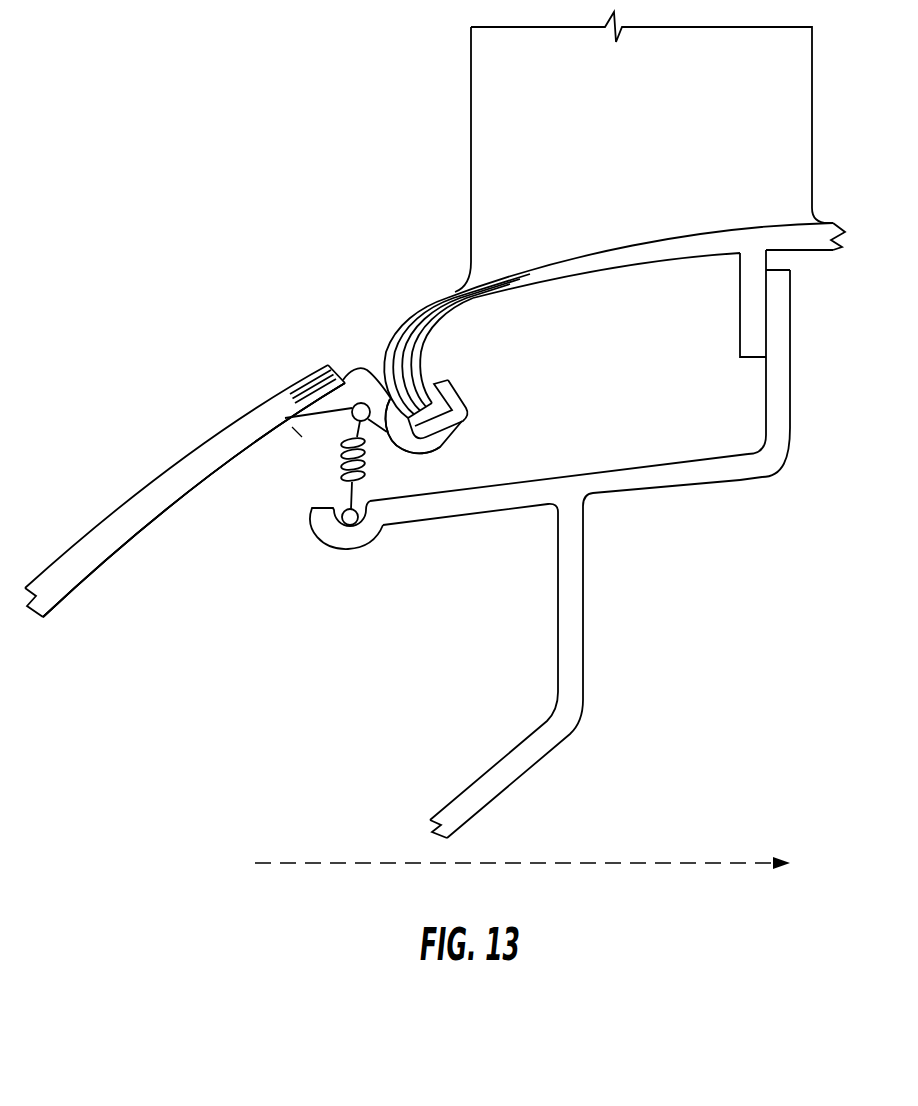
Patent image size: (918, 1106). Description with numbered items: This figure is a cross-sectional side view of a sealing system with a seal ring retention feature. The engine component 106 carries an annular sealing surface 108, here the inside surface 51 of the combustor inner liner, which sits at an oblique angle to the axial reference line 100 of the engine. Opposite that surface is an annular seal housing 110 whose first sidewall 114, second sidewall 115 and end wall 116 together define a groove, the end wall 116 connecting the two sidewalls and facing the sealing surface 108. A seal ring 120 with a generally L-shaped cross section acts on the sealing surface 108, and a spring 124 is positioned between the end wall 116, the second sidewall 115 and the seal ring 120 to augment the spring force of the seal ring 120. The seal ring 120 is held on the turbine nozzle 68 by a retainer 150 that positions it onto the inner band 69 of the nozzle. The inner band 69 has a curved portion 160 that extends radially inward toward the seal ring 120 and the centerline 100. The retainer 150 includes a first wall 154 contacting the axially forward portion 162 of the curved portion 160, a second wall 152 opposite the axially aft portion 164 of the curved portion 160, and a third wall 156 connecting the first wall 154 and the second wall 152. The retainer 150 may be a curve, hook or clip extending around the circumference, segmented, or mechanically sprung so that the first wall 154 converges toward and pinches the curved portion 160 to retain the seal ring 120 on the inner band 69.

The inside surface 51 is at (86, 574).
The turbine nozzle 68 is at (654, 175).
The inner band 69 is at (445, 306).
The axial reference line 100 is at (617, 862).
The engine component 106 is at (150, 490).
The sealing surface 108 is at (190, 494).
The seal housing 110 is at (557, 560).
The first sidewall 114 is at (767, 410).
The second sidewall 115 is at (313, 507).
The end wall 116 is at (555, 472).
The seal ring 120 is at (300, 440).
The spring 124 is at (335, 485).
The retainer 150 is at (437, 434).
The second wall 152 is at (453, 393).
The first wall 154 is at (380, 422).
The third wall 156 is at (438, 437).
The curved portion 160 is at (393, 338).
The axially forward portion 162 is at (382, 374).
The axially aft portion 164 is at (410, 374).